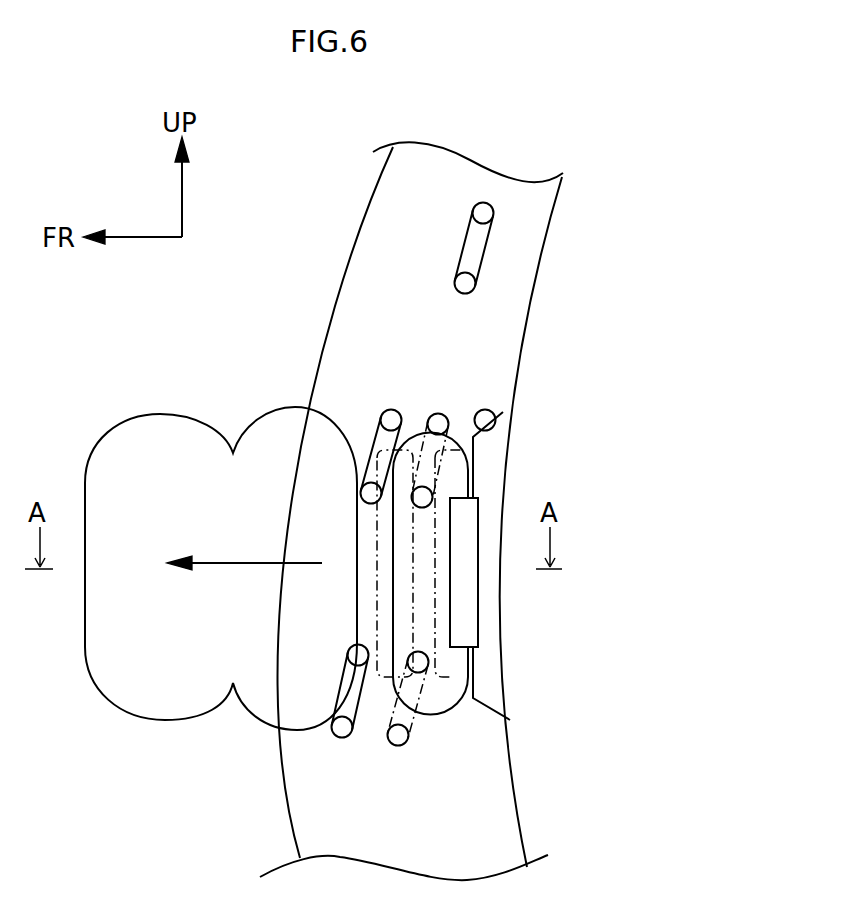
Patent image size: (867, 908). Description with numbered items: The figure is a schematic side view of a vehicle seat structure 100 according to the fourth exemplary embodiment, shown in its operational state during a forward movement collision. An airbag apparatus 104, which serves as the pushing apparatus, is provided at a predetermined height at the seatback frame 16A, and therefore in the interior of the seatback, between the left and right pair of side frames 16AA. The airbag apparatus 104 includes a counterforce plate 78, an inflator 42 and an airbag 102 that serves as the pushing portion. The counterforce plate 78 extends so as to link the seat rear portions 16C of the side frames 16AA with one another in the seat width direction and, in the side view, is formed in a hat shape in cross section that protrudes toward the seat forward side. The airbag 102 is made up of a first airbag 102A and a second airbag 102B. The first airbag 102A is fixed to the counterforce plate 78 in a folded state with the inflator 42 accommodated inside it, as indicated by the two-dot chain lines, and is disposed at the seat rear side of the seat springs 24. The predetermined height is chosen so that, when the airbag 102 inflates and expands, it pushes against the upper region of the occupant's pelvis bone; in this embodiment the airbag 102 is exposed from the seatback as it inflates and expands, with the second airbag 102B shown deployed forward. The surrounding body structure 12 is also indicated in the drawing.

The vehicle body / pillar 12 is at (243, 820).
The seatback frame 16A is at (491, 504).
The side frames 16AA is at (491, 504).
The seat rear portions 16C is at (508, 335).
The seat springs 24 is at (456, 283).
The inflator 42 is at (478, 604).
The counterforce plate 78 is at (503, 423).
The vehicle seat structure 100 is at (279, 333).
The airbag 102 is at (294, 555).
The first airbag 102A is at (411, 435).
The second airbag 102B is at (252, 422).
The airbag apparatus 104 is at (316, 280).